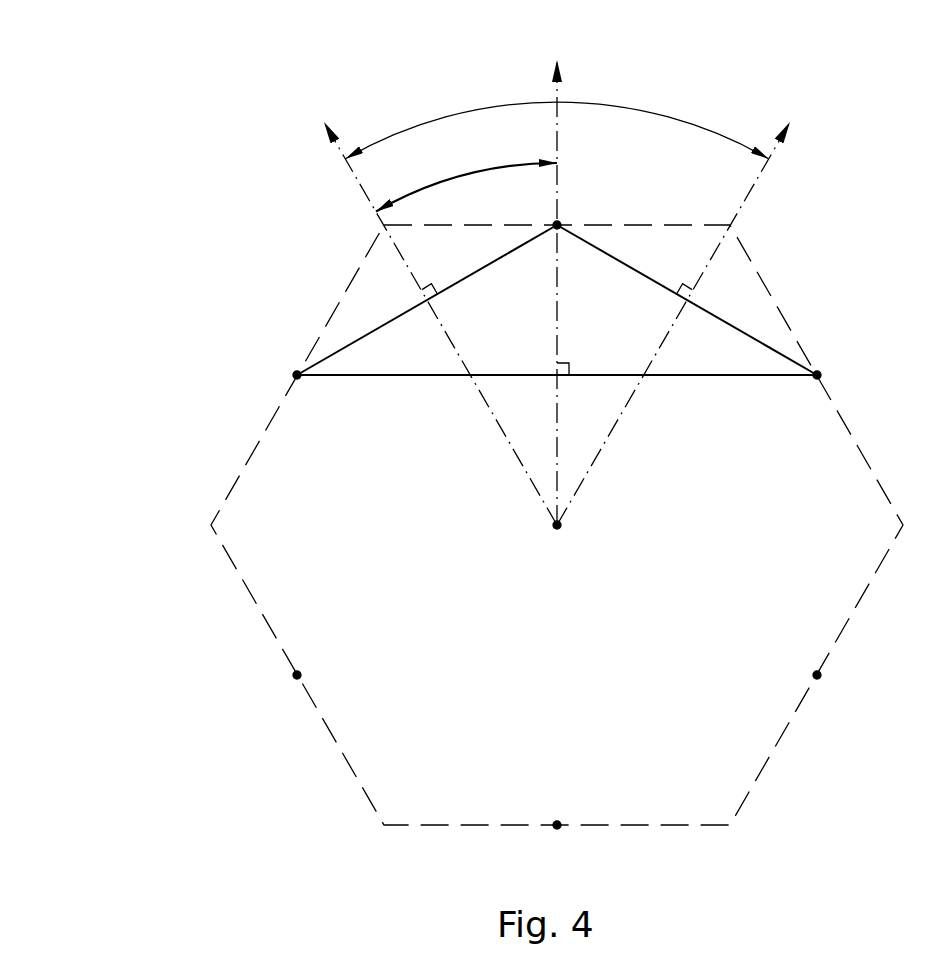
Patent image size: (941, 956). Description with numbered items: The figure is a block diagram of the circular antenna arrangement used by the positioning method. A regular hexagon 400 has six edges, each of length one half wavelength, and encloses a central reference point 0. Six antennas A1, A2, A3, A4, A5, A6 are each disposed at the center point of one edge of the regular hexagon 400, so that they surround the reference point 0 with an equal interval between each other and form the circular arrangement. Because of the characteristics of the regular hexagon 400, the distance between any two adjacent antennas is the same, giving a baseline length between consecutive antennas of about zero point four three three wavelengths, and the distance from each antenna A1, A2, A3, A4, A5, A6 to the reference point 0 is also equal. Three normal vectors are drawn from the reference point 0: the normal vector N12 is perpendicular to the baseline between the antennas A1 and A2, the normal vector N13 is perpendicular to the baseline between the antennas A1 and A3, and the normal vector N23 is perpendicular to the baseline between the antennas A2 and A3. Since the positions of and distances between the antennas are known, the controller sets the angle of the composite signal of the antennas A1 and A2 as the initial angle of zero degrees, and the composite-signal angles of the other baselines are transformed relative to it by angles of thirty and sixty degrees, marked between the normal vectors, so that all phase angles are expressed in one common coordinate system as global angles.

The regular hexagon 400 is at (243, 467).
The reference point 0 is at (560, 528).
The antenna A1 is at (294, 373).
The antenna A2 is at (560, 222).
The antenna A3 is at (820, 373).
The antenna A4 is at (820, 678).
The antenna A5 is at (560, 828).
The antenna A6 is at (294, 680).
The normal vector N12 is at (428, 309).
The normal vector N13 is at (557, 276).
The normal vector N23 is at (688, 308).